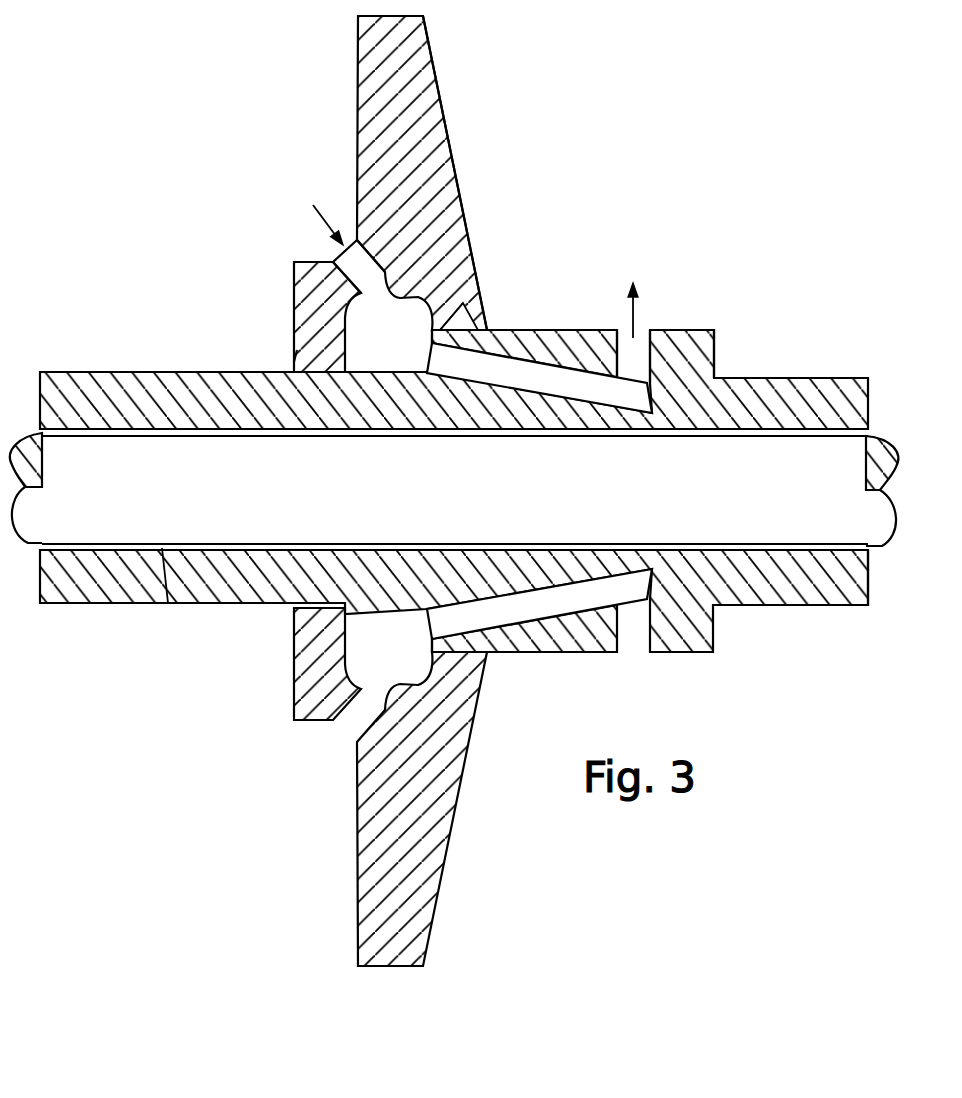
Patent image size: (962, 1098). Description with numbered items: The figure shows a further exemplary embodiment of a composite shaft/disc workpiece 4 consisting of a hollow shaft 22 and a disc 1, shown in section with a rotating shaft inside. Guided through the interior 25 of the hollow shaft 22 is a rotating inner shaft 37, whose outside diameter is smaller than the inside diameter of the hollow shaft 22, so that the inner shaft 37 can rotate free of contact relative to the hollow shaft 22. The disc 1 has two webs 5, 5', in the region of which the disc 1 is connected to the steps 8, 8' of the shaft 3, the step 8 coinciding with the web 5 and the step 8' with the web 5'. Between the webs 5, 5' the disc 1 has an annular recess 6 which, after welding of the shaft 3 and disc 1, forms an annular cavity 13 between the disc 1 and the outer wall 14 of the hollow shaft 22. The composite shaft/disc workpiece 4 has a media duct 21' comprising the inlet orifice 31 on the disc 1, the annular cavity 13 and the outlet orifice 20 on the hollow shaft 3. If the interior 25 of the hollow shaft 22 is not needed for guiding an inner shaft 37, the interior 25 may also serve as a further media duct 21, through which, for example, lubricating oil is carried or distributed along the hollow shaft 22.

The disc 1 is at (427, 90).
The shaft 3 is at (750, 593).
The composite shaft/disc workpiece 4 is at (634, 230).
The annular web 5 is at (287, 491).
The annular web 5' is at (494, 287).
The annular recess 6 is at (470, 262).
The step 8 is at (255, 338).
The step 8' is at (494, 303).
The annular cavity 13 is at (345, 305).
The outer wall 14 is at (72, 372).
The outlet orifice 20 is at (648, 337).
The media duct 21 is at (158, 603).
The media duct 21' is at (479, 261).
The hollow shaft 22 is at (815, 593).
The interior 25 is at (820, 431).
The inlet orifice 31 is at (347, 268).
The inner shaft 37 is at (448, 509).